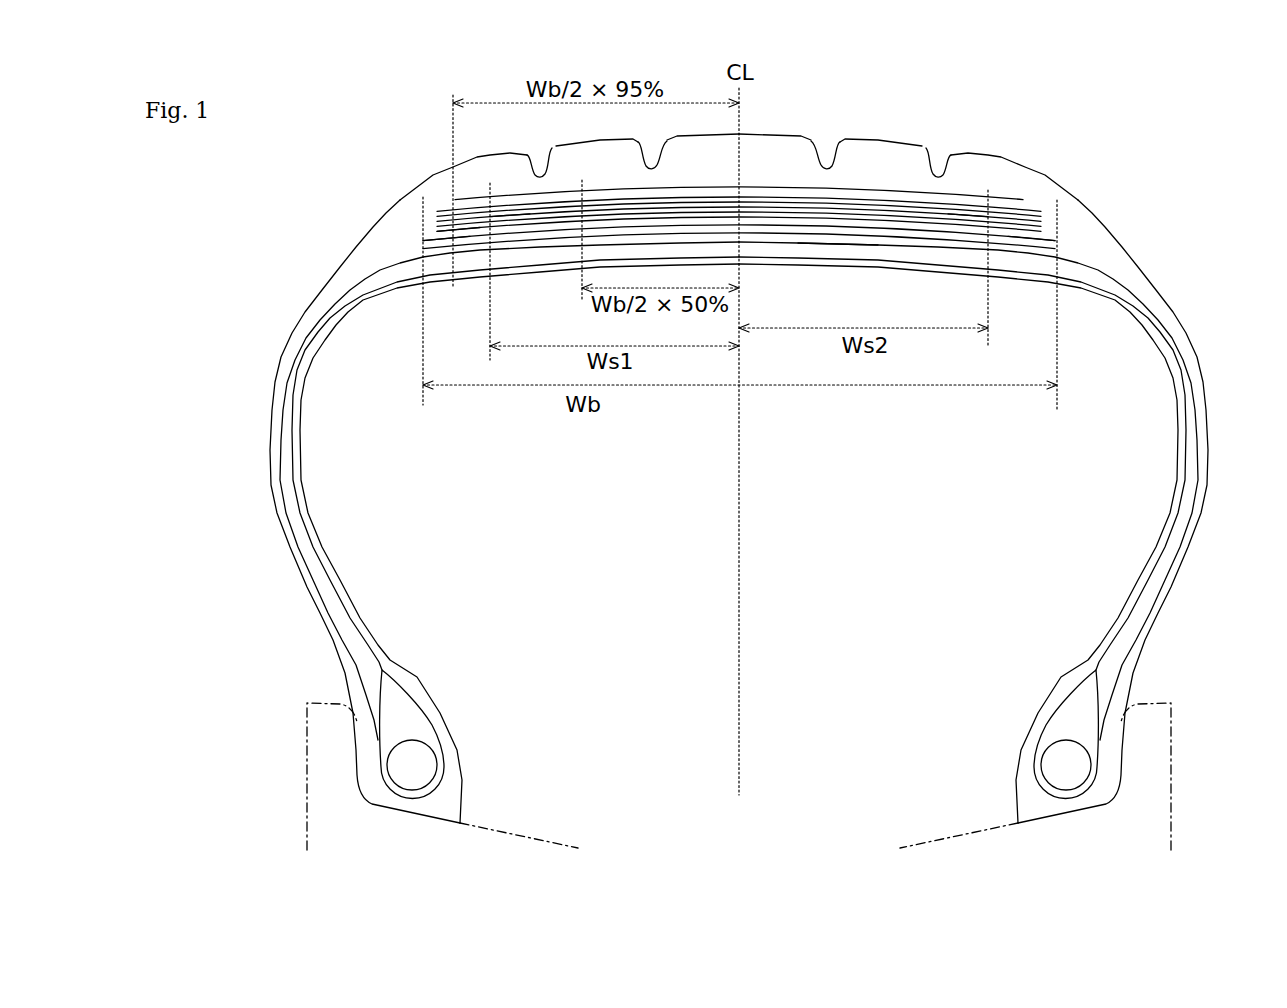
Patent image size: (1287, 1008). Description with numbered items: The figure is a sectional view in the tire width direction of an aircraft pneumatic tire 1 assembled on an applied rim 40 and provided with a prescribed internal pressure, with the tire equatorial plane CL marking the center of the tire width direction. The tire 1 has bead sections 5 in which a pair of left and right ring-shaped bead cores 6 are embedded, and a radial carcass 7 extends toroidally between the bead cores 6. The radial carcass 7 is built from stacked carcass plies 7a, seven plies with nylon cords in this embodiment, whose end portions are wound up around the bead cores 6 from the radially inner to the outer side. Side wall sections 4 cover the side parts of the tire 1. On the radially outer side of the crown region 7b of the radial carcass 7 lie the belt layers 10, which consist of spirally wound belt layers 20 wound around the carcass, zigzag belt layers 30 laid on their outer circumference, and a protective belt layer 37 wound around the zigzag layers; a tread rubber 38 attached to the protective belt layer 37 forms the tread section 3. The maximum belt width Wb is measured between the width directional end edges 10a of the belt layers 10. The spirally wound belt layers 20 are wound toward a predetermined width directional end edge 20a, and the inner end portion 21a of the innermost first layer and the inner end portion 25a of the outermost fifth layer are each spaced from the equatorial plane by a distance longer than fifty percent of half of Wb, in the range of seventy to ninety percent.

The aircraft pneumatic tire 1 is at (742, 463).
The tread section 3 is at (786, 127).
The tread rubber 38 is at (895, 148).
The side wall section 4 is at (279, 518).
The bead section 5 is at (438, 702).
The bead core 6 is at (432, 765).
The radial carcass 7 is at (341, 637).
The carcass ply 7a is at (329, 580).
The crown region 7b is at (847, 250).
The belt layers 10 is at (754, 227).
The width directional end edge 10a is at (410, 250).
The spirally wound belt layer 20 is at (1063, 238).
The width directional end edge 20a is at (413, 238).
The inner end portion 21a is at (497, 240).
The inner end portion 25a is at (986, 222).
The zigzag belt layers 30 is at (1063, 218).
The protective belt layer 37 is at (1017, 203).
The applied rim 40 is at (309, 785).